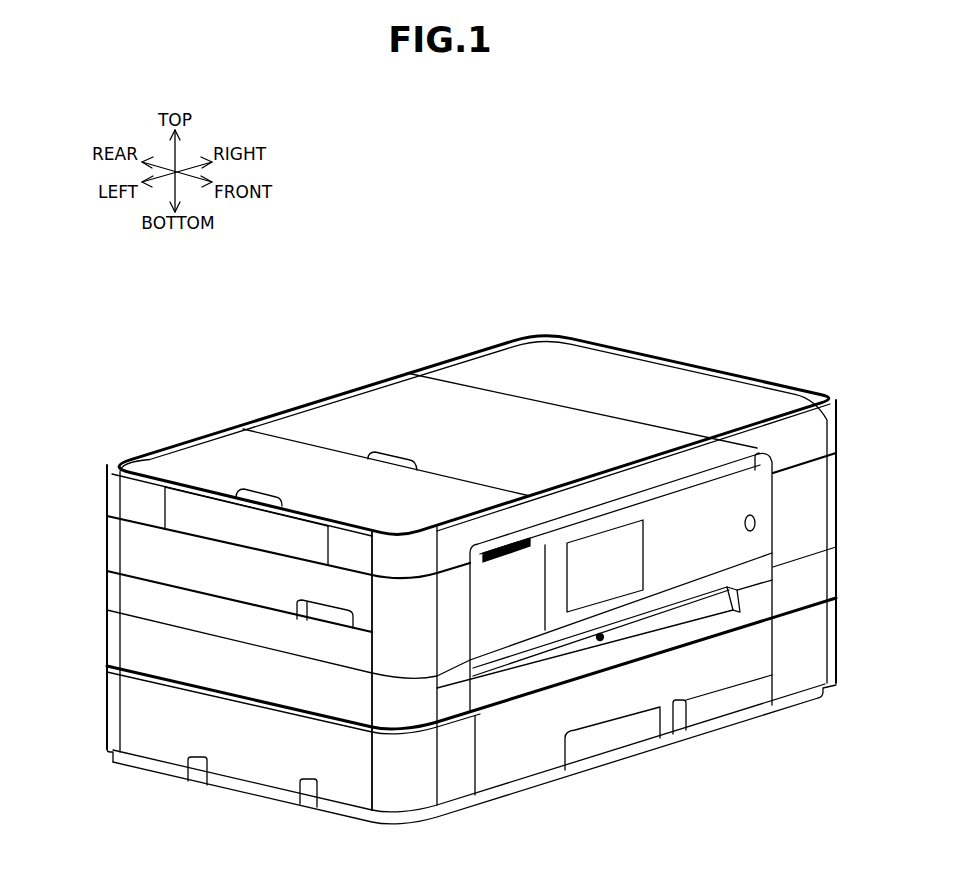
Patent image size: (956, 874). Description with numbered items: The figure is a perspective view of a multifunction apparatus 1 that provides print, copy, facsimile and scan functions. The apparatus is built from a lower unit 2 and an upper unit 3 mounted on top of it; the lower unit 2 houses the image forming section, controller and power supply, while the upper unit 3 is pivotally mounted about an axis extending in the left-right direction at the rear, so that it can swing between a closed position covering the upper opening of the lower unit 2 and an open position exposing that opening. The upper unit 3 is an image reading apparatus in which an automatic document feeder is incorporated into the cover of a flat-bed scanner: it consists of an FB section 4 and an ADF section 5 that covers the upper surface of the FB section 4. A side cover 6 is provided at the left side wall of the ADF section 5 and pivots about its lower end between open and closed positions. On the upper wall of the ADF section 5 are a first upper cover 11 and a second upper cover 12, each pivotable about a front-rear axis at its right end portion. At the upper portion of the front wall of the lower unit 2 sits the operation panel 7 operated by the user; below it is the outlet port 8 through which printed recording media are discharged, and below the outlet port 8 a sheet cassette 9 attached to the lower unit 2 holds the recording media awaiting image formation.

The multifunction apparatus 1 is at (644, 300).
The lower unit 2 is at (66, 568).
The upper unit 3 is at (66, 455).
The FB section 4 is at (99, 515).
The ADF section 5 is at (99, 455).
The side cover 6 is at (197, 505).
The operation panel 7 is at (712, 522).
The outlet port 8 is at (601, 640).
The sheet cassette 9 is at (712, 712).
The first upper cover 11 is at (300, 418).
The second upper cover 12 is at (212, 447).